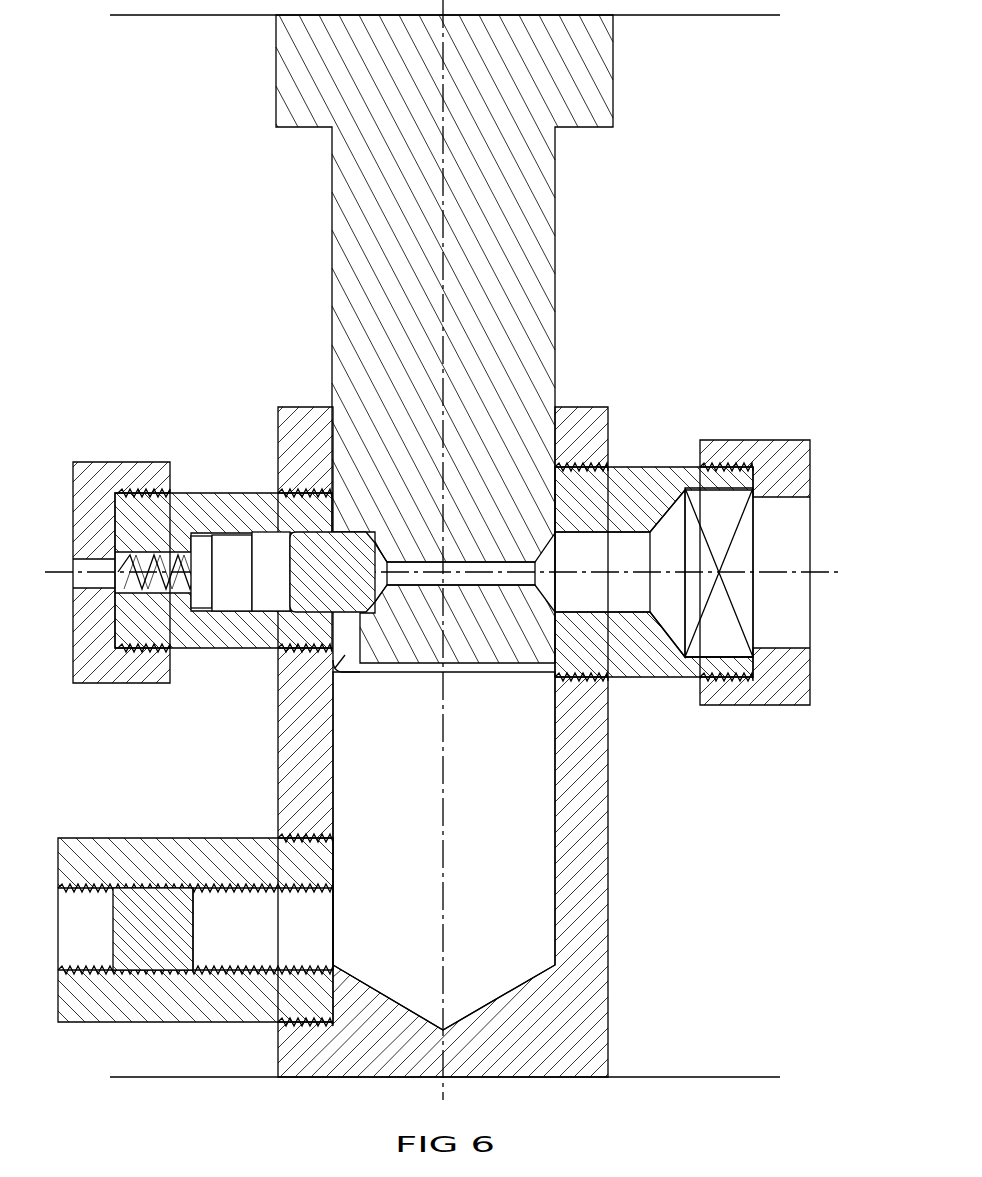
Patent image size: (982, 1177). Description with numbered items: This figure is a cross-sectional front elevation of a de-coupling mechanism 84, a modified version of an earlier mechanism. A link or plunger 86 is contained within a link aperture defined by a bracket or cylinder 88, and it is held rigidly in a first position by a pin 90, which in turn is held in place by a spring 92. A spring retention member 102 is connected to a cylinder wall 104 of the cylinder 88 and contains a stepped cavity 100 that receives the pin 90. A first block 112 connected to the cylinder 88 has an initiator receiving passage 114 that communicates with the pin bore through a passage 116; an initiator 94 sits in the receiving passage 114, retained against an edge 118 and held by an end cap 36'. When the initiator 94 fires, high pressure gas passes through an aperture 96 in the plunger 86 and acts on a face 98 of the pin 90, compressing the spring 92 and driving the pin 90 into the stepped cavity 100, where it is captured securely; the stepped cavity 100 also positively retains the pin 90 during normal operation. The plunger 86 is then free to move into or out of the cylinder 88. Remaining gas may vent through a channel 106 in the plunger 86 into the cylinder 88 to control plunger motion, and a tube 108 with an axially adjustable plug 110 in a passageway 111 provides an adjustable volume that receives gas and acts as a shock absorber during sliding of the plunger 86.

The de-coupling mechanism 84 is at (785, 110).
The plunger 86 is at (535, 232).
The cylinder 88 is at (557, 862).
The pin 90 is at (328, 542).
The spring 92 is at (192, 543).
The initiator 94 is at (712, 623).
The aperture 96 is at (440, 560).
The face 98 is at (385, 587).
The stepped cavity 100 is at (270, 538).
The spring retention member 102 is at (175, 637).
The cylinder wall 104 is at (293, 768).
The channel 106 is at (347, 655).
The tube 108 is at (160, 847).
The plug 110 is at (128, 918).
The passageway 111 is at (252, 955).
The first block 112 is at (668, 472).
The initiator receiving passage 114 is at (699, 660).
The passage 116 is at (598, 545).
The edge 118 is at (673, 500).
The end cap 36' is at (768, 556).